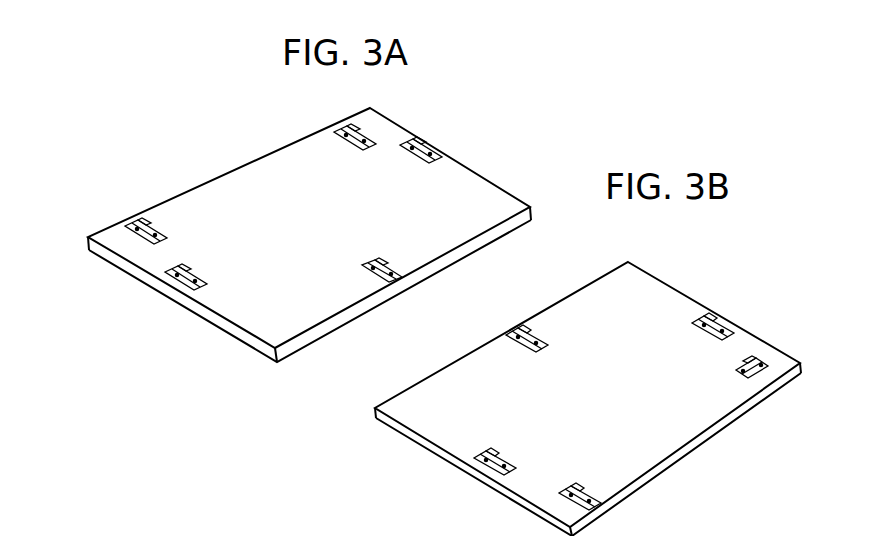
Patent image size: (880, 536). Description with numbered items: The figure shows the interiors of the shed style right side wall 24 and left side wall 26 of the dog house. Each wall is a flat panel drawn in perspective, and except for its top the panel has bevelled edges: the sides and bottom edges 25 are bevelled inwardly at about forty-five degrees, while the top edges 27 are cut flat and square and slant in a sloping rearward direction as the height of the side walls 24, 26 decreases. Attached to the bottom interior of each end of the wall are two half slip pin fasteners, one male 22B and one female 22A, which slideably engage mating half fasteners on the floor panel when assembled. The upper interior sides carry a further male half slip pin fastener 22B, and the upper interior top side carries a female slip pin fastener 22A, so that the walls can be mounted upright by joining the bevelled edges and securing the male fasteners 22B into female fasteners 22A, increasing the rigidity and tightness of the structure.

In FIG. 3A, the right side wall 24 is at (510, 190).
In FIG. 3B, the left side wall 26 is at (783, 352).
In FIG. 3A, the sides and bottom edges 25 is at (280, 148).
In FIG. 3B, the sides and bottom edges 25 is at (708, 308).
In FIG. 3A, the top edges 27 is at (358, 316).
In FIG. 3B, the top edges 27 is at (422, 381).
In FIG. 3A, the female half slip pin fastener 22A is at (347, 133).
In FIG. 3B, the female half slip pin fastener 22A is at (512, 334).
In FIG. 3A, the male half slip pin fastener 22B is at (480, 137).
In FIG. 3B, the male half slip pin fastener 22B is at (695, 322).